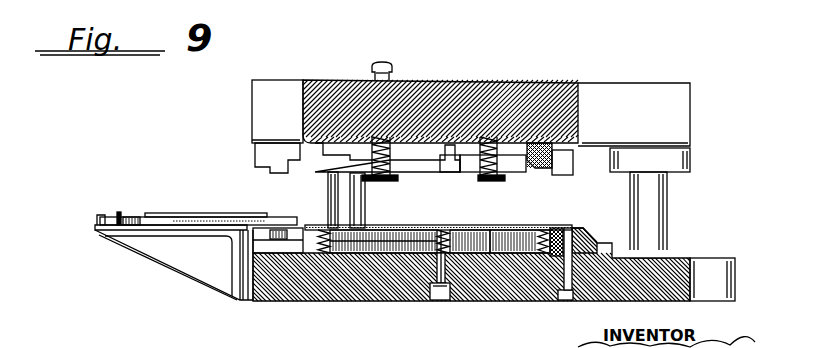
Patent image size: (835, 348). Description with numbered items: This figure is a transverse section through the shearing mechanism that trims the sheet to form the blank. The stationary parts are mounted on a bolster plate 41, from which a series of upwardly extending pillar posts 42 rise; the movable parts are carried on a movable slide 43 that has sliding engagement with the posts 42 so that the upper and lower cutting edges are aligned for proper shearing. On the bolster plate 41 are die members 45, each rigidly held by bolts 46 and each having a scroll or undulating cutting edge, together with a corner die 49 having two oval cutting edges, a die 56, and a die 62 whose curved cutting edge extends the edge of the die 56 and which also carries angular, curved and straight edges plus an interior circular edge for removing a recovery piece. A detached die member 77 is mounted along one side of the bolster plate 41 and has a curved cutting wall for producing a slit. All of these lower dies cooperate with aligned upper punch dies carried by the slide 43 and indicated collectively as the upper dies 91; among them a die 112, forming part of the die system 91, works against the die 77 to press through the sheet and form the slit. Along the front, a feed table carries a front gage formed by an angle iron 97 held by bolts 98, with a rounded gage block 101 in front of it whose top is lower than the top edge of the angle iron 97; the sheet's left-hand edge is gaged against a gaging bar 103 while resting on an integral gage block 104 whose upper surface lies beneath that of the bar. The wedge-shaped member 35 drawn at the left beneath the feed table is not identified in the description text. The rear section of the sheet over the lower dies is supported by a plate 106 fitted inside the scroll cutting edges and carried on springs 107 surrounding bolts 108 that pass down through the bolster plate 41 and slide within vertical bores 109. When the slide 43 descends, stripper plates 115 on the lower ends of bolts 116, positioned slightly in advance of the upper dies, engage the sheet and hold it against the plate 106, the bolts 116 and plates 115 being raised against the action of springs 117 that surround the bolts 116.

The movable slide 43 is at (509, 92).
The die 112 is at (263, 157).
The bolts 116 is at (371, 147).
The springs 117 is at (391, 147).
The upper dies 91 is at (580, 171).
The stripper plates 115 is at (380, 180).
The pillar posts 42 is at (328, 196).
The bolster plate 41 is at (292, 303).
The die members 45 is at (585, 238).
The bolts 46 is at (568, 301).
The corner die 49 is at (531, 229).
The die 62 is at (391, 229).
The die 56 is at (466, 229).
The plate 106 is at (493, 229).
The springs 107 is at (320, 231).
The bolts 108 is at (441, 301).
The vertical bores 109 is at (437, 272).
The wedge 35 is at (172, 262).
The detached die member 77 is at (262, 244).
The angle iron 97 is at (118, 212).
The bolts 98 is at (97, 218).
The rounded gage block 101 is at (133, 215).
The gaging bar 103 is at (178, 212).
The gage block 104 is at (218, 219).